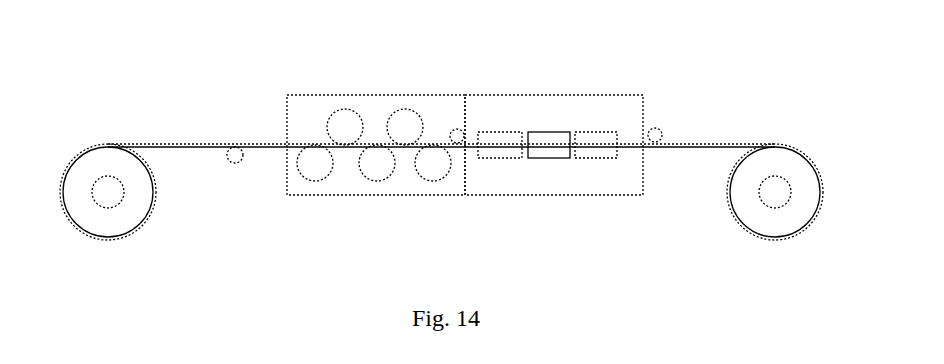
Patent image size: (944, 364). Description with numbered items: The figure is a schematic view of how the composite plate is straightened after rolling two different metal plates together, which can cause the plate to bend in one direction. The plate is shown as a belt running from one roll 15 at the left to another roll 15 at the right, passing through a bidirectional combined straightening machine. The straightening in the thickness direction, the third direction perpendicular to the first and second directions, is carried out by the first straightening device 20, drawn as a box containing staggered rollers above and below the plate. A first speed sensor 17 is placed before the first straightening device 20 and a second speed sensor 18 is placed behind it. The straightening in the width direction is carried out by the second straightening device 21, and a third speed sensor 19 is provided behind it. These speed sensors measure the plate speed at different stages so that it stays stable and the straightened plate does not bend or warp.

The roll 15 is at (449, 164).
The first speed sensor 17 is at (261, 207).
The second speed sensor 18 is at (484, 191).
The third speed sensor 19 is at (682, 189).
The first straightening device 20 is at (376, 117).
The second straightening device 21 is at (554, 117).